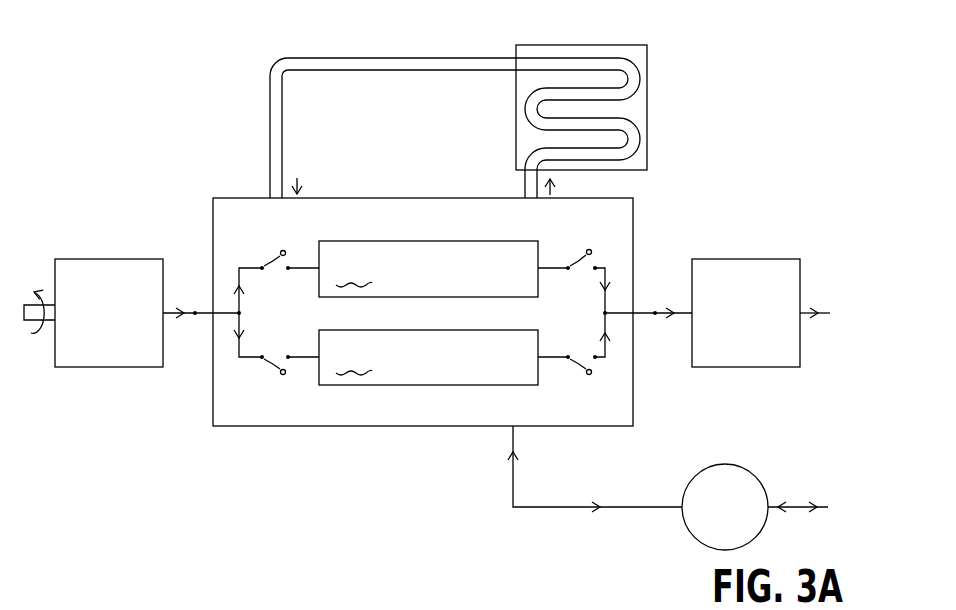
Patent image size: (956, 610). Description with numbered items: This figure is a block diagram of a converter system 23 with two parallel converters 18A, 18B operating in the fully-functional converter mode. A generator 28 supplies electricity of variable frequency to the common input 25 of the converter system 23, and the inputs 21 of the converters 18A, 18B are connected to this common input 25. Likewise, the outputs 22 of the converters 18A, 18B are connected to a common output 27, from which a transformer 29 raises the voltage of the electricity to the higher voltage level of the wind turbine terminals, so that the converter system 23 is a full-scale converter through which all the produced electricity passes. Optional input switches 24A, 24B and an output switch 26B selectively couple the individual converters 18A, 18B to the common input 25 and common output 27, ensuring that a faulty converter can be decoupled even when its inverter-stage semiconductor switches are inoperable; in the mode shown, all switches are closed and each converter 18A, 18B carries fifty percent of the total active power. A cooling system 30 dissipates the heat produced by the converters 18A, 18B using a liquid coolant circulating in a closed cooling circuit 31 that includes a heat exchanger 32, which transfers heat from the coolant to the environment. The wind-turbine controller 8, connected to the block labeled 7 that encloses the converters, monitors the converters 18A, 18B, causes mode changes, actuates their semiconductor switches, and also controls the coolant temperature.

The electrolysis system 7 is at (395, 427).
The wind-turbine controller 8 is at (727, 465).
The converter 18A is at (428, 269).
The converter 18B is at (428, 357).
The input 21 is at (296, 266).
The output 22 is at (554, 266).
The converter system 23 is at (196, 182).
The input switch 24A is at (270, 262).
The input switch 24B is at (270, 366).
The common input 25 is at (195, 315).
The output switch 26B is at (578, 262).
The common output 27 is at (655, 315).
The generator 28 is at (108, 367).
The transformer 29 is at (746, 367).
The cooling system 30 is at (401, 55).
The closed cooling circuit 31 is at (425, 72).
The heat exchanger 32 is at (648, 137).